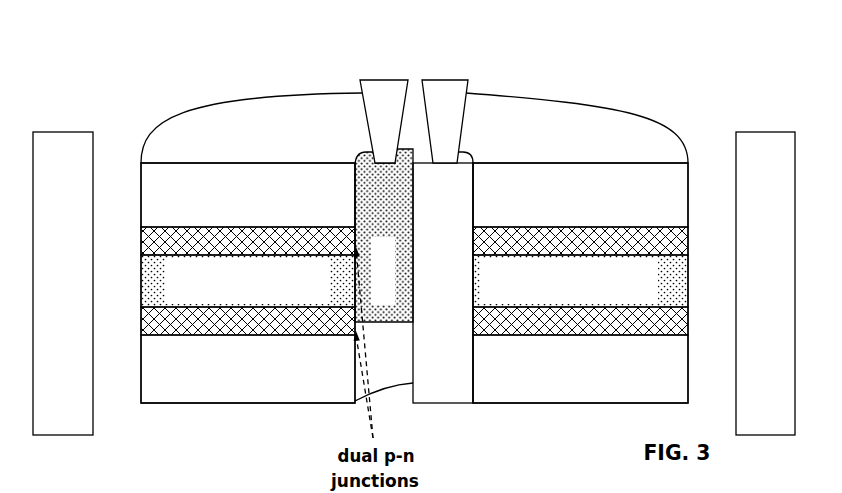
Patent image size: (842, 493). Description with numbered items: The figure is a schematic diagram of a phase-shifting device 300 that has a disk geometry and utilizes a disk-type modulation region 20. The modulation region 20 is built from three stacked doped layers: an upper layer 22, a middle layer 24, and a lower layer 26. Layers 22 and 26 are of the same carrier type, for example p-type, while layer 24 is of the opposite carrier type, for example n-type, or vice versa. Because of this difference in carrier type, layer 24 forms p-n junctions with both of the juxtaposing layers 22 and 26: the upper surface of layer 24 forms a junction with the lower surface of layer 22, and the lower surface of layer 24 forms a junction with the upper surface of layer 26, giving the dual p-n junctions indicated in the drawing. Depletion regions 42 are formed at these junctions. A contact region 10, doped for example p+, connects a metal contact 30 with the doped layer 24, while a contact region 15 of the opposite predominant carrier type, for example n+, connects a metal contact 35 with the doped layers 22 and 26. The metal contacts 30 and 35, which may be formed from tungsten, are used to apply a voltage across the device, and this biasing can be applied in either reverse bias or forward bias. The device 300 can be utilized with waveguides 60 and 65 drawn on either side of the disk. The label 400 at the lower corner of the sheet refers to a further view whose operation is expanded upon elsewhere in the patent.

The phase-shifting device 300 is at (145, 42).
The modulation region 20 is at (137, 405).
The doped layer 22 is at (414, 195).
The doped layer 24 is at (414, 281).
The doped layer 26 is at (414, 369).
The contact region 10 is at (384, 235).
The contact region 15 is at (443, 277).
The metal contact 30 is at (384, 121).
The metal contact 35 is at (445, 121).
The depletion regions 42 is at (688, 328).
The waveguide 60 is at (63, 283).
The waveguide 65 is at (765, 283).
The device of FIG. 4 400 is at (60, 492).